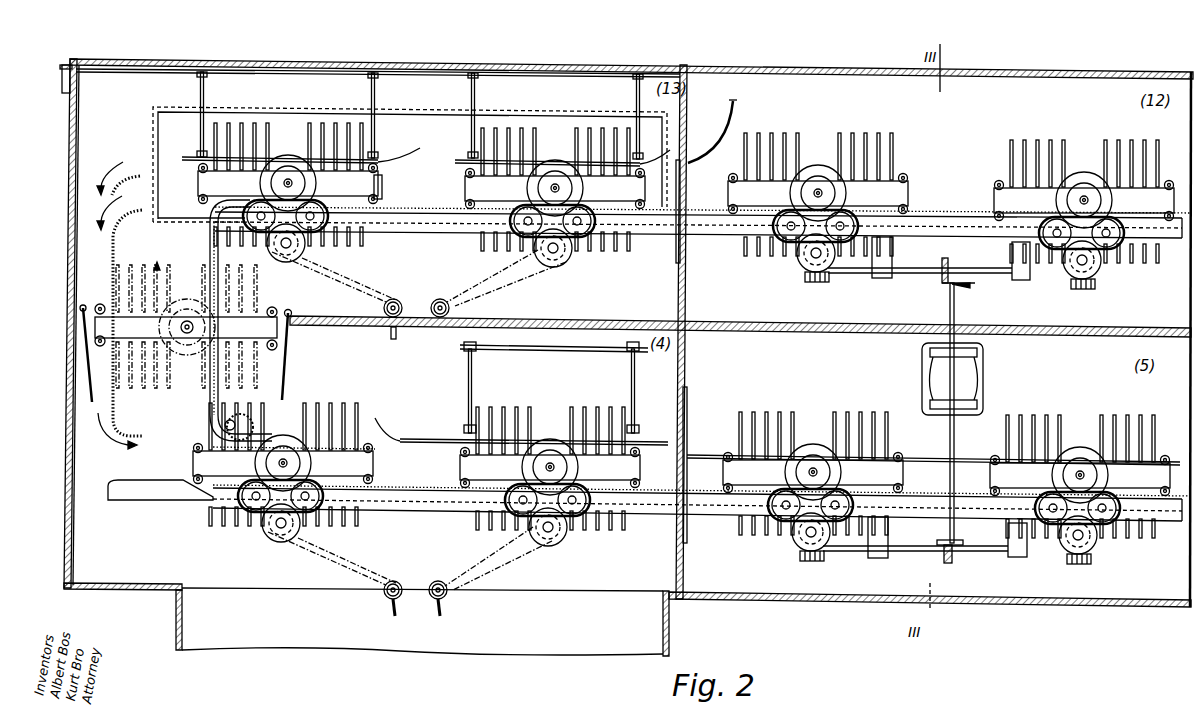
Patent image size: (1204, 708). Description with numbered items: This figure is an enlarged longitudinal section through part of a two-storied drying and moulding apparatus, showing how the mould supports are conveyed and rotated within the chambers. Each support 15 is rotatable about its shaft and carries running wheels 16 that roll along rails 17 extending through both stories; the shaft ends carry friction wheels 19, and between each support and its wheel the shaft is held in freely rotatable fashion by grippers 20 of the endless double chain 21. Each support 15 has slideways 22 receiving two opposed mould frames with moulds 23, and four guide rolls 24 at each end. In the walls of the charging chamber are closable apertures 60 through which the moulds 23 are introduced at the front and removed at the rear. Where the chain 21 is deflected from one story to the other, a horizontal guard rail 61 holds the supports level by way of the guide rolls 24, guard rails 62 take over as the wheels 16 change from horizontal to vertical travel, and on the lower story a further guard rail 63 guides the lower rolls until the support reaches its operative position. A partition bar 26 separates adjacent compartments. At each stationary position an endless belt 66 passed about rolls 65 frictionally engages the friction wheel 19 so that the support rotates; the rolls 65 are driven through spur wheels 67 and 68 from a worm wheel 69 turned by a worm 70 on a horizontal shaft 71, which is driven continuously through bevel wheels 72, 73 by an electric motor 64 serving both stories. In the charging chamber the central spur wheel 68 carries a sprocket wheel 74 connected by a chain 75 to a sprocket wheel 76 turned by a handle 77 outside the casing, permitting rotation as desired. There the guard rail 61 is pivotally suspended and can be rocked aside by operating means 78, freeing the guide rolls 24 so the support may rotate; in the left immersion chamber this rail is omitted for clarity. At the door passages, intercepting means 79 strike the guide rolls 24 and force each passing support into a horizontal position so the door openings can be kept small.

The support 15 is at (220, 183).
The running wheel 16 is at (287, 156).
The rail 17 is at (445, 220).
The friction wheel 19 is at (306, 186).
The gripper 20 is at (562, 189).
The double chain 21 is at (210, 243).
The slideway 22 is at (383, 185).
The mould 23 is at (318, 125).
The guide roll 24 is at (197, 172).
The partition bar 26 is at (689, 405).
The aperture 60 is at (442, 122).
The guard rail 61 is at (402, 156).
The guard rail 62 is at (117, 178).
The guard rail 63 is at (135, 492).
The electric motor 64 is at (985, 385).
The roll 65 is at (780, 217).
The endless belt 66 is at (845, 237).
The spur wheel 67 is at (272, 238).
The spur wheel 68 is at (289, 262).
The worm wheel 69 is at (827, 253).
The worm 70 is at (813, 283).
The horizontal shaft 71 is at (910, 270).
The bevel wheel 72 is at (950, 268).
The bevel wheel 73 is at (971, 285).
The sprocket wheel 74 is at (403, 418).
The chain 75 is at (432, 423).
The sprocket wheel 76 is at (398, 304).
The handle 77 is at (393, 338).
The operating means 78 is at (80, 84).
The intercepting means 79 is at (734, 104).